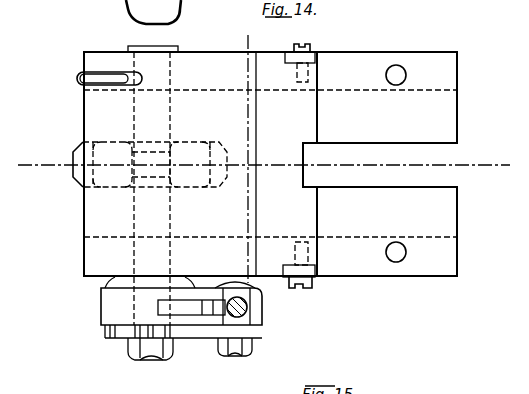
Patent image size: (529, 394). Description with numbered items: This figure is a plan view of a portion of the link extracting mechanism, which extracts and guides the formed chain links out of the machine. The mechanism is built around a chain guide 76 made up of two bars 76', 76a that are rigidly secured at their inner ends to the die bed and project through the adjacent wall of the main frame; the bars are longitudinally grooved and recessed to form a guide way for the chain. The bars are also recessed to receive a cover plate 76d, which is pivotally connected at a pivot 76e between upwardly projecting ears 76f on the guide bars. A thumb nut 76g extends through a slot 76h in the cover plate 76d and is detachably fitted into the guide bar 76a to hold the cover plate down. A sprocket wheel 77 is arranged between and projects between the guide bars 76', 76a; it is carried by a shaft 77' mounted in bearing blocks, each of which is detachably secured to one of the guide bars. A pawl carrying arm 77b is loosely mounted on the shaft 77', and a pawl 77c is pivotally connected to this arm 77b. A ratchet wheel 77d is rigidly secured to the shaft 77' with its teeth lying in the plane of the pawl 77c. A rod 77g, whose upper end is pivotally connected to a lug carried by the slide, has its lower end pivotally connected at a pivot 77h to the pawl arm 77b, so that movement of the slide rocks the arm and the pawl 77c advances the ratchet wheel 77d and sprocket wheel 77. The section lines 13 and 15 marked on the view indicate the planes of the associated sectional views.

The section line 13- 13 is at (22, 167).
The section line 15- 15 is at (236, 35).
The chain guide 76 is at (270, 154).
The guide bar 76a is at (458, 75).
The guide bar 76' is at (439, 252).
The cover plate 76d is at (192, 60).
The pivotal connection 76e is at (303, 44).
The upwardly projecting ears 76f is at (316, 57).
The thumb nut 76g is at (78, 77).
The slot 76h is at (82, 85).
The sprocket wheel 77 is at (135, 164).
The shaft 77' is at (150, 360).
The pawl carrying arm 77b is at (208, 320).
The pawl 77c is at (192, 335).
The ratchet wheel 77d is at (106, 338).
The rod 77g is at (248, 310).
The pivotal connection 77h is at (228, 356).